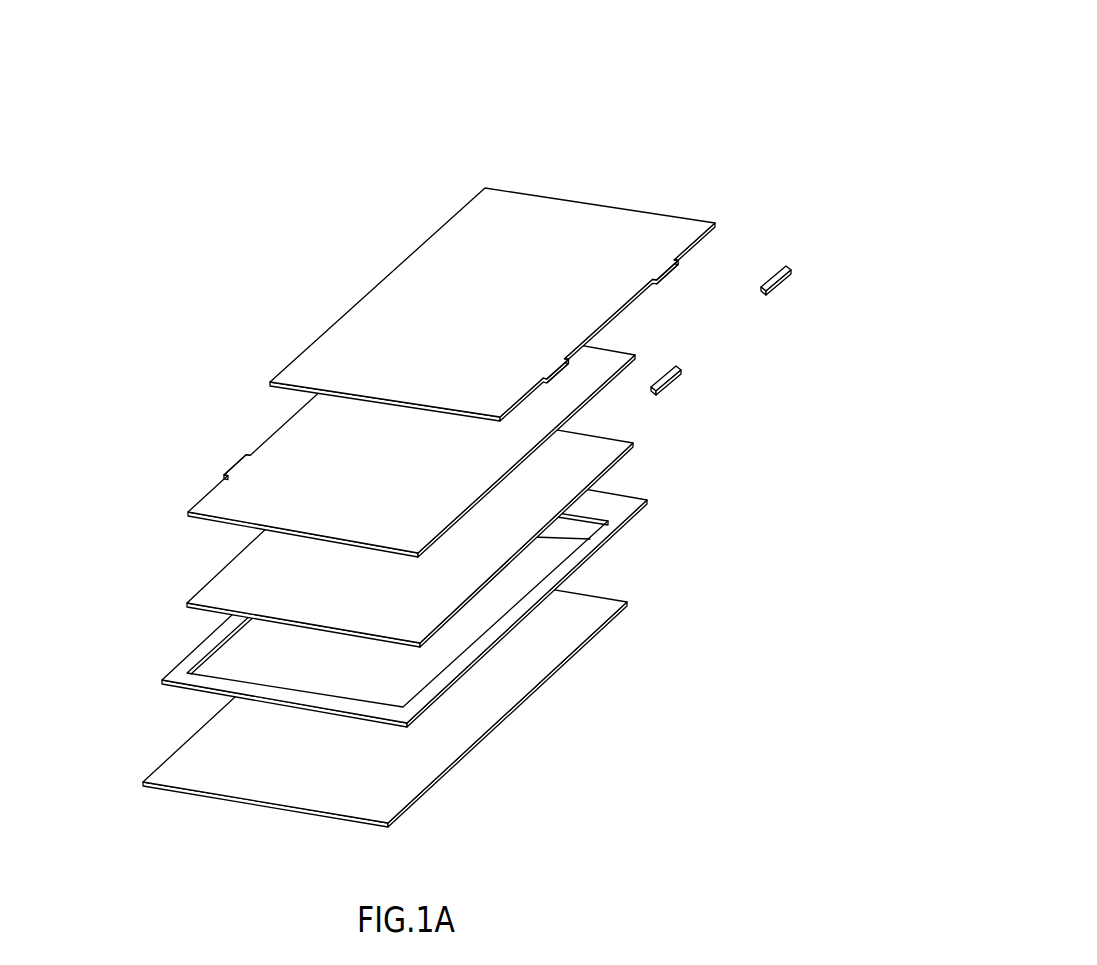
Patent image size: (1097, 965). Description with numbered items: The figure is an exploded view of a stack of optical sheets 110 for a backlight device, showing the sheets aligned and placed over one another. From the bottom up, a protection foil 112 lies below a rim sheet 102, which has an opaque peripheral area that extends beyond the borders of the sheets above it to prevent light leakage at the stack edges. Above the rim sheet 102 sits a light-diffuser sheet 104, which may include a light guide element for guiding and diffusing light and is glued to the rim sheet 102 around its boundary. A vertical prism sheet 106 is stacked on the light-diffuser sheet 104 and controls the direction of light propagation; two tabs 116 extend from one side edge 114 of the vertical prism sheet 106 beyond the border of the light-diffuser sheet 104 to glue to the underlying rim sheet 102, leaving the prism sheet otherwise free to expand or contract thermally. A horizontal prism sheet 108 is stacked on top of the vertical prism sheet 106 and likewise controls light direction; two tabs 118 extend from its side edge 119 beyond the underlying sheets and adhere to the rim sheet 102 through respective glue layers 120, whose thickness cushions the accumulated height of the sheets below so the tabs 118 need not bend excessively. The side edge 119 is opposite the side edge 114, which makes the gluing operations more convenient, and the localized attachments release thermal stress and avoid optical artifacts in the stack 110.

The stack of optical sheets 110 is at (662, 132).
The horizontal prism sheet 108 is at (298, 365).
The vertical prism sheet 106 is at (237, 500).
The light-diffuser sheet 104 is at (233, 570).
The rim sheet 102 is at (187, 662).
The protection foil 112 is at (187, 760).
The side edge 114 is at (258, 408).
The tabs 116 is at (243, 462).
The tabs 118 is at (666, 272).
The side edge 119 is at (643, 318).
The glue layers 120 is at (788, 277).